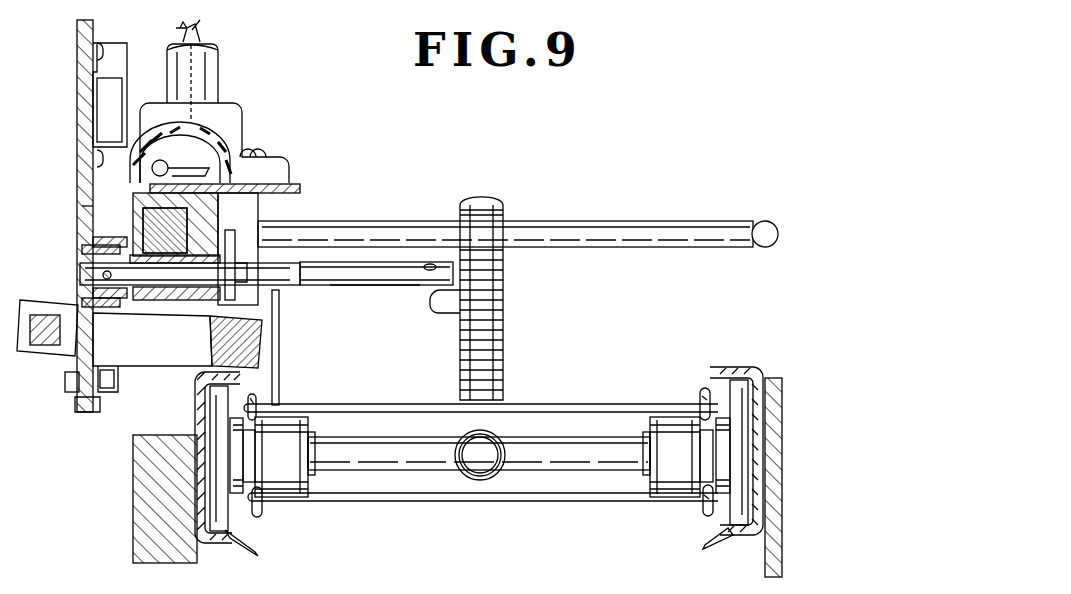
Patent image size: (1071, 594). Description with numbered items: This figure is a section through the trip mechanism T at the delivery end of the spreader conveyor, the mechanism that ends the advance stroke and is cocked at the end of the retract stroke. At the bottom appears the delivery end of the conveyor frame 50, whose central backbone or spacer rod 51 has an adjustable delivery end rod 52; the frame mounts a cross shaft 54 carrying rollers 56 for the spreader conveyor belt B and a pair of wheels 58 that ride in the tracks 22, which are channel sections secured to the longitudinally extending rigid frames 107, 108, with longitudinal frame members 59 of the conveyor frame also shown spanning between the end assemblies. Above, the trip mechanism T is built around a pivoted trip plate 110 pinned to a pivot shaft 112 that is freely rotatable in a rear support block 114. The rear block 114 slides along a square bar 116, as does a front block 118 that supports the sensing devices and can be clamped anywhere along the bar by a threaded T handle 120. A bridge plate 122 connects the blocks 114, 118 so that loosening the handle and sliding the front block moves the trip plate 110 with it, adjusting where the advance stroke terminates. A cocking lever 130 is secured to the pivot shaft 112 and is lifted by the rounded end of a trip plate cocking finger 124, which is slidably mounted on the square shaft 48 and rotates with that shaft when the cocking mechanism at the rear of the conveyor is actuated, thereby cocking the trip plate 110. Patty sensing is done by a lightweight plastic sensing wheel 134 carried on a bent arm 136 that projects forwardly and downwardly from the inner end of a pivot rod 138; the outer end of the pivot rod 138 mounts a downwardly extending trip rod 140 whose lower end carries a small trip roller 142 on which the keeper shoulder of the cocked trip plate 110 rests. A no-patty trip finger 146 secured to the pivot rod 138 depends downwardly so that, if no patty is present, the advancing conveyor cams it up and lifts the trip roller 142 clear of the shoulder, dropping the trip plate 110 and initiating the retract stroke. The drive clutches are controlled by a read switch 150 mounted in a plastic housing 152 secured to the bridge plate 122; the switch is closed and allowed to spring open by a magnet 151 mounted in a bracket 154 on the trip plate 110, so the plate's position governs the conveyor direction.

The trip plate 110 is at (82, 130).
The bracket 154 is at (97, 63).
The magnet 151 is at (97, 103).
The plastic housing 152 is at (205, 142).
The read switch 150 is at (153, 170).
The bridge plate 122 is at (297, 184).
The square bar 116 is at (147, 226).
The rear support block 114 is at (82, 206).
The front block 118 is at (258, 205).
The pivot shaft 112 is at (82, 272).
The cocking lever 130 is at (270, 302).
The pivot rod 138 is at (393, 277).
The bent arm 136 is at (433, 310).
The no-patty trip finger 146 is at (280, 322).
The threaded T handle 120 is at (580, 221).
The sensing wheel 134 is at (460, 344).
The trip plate cocking finger 124 is at (170, 345).
The square shaft 48 is at (42, 342).
The trip rod 140 is at (118, 370).
The trip roller 142 is at (100, 407).
The longitudinal frame 107 is at (147, 472).
The longitudinal frame 108 is at (775, 472).
The tracks 22 is at (215, 545).
The wheels 58 is at (228, 528).
The frame rail 59 is at (370, 405).
The rollers 56 is at (300, 497).
The cross shaft 54 is at (523, 470).
The delivery end rod 52 is at (486, 447).
The spacer rod 51 is at (466, 440).
The frame 50 is at (483, 485).
The spreader conveyor belt B is at (555, 405).
The trip mechanism T is at (370, 150).